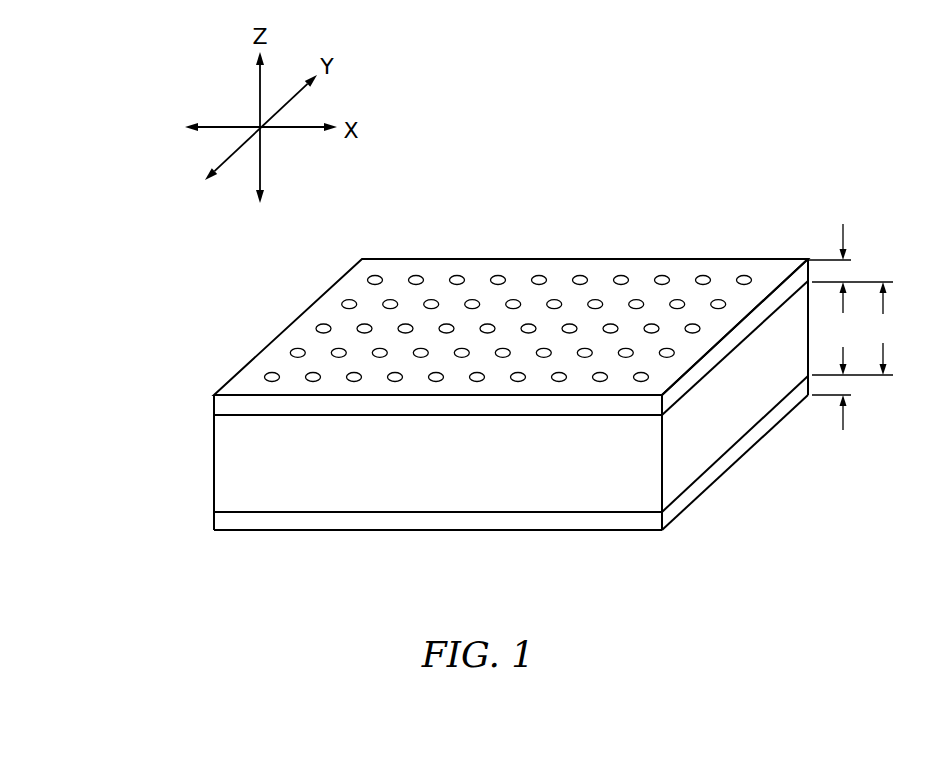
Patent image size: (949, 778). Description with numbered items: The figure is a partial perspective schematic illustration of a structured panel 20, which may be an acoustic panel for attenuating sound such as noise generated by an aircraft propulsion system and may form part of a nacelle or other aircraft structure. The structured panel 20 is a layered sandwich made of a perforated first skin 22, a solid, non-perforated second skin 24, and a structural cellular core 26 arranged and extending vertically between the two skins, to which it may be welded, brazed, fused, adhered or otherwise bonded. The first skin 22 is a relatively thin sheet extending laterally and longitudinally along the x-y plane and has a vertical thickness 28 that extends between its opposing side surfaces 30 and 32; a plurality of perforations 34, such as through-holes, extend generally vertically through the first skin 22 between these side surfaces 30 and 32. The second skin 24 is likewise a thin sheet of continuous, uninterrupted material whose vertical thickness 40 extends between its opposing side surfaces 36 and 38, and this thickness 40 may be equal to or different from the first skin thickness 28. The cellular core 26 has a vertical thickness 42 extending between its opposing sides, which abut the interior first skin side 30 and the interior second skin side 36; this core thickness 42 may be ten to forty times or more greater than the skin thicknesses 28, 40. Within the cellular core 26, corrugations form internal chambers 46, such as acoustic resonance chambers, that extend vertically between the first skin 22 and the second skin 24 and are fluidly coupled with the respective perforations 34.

The structured panel 20 is at (463, 342).
The perforated first skin 22 is at (197, 399).
The solid non-perforated second skin 24 is at (197, 525).
The structural cellular core 26 is at (199, 418).
The first skin vertical thickness 28 is at (843, 224).
The first skin side surface 30 is at (772, 308).
The first skin side surface 32 is at (773, 292).
The perforations 34 is at (432, 300).
The second skin side surface 36 is at (763, 410).
The second skin side surface 38 is at (742, 457).
The second skin vertical thickness 40 is at (843, 430).
The core vertical thickness 42 is at (855, 328).
The internal chambers 46 is at (735, 347).